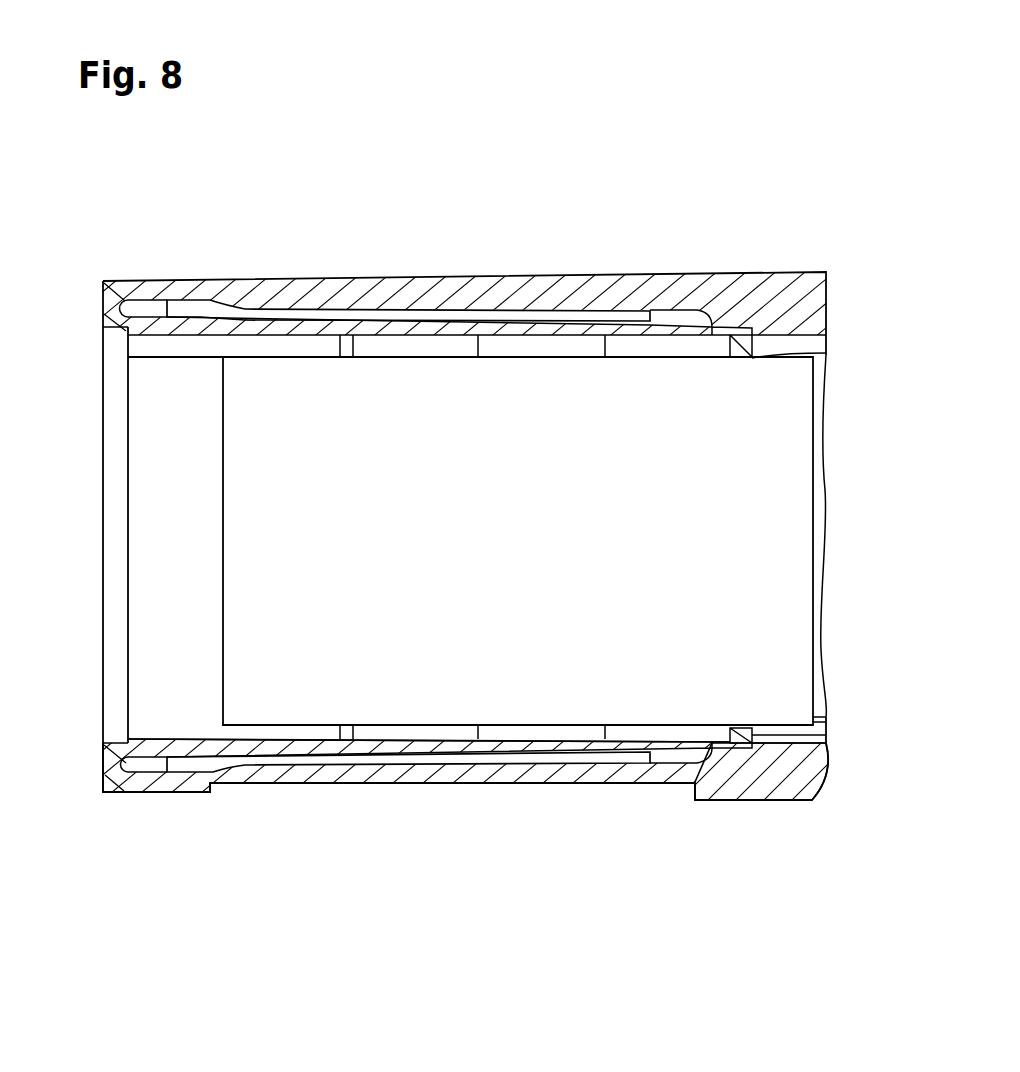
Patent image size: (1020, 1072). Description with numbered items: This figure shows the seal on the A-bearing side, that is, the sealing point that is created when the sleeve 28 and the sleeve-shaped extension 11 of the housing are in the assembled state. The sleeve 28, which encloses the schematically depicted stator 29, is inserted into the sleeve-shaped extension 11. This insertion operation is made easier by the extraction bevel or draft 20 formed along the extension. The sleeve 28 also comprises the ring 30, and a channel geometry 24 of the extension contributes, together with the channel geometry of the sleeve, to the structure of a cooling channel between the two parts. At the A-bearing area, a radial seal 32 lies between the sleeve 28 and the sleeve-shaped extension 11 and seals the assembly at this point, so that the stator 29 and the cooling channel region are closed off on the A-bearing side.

The sleeve-shaped extension 11 is at (457, 573).
The channel geometry 24 is at (547, 783).
The extraction bevel or draft 20 is at (362, 783).
The sleeve 28 is at (160, 545).
The stator 29 is at (777, 498).
The ring 30 is at (126, 792).
The radial seal 32 is at (742, 730).